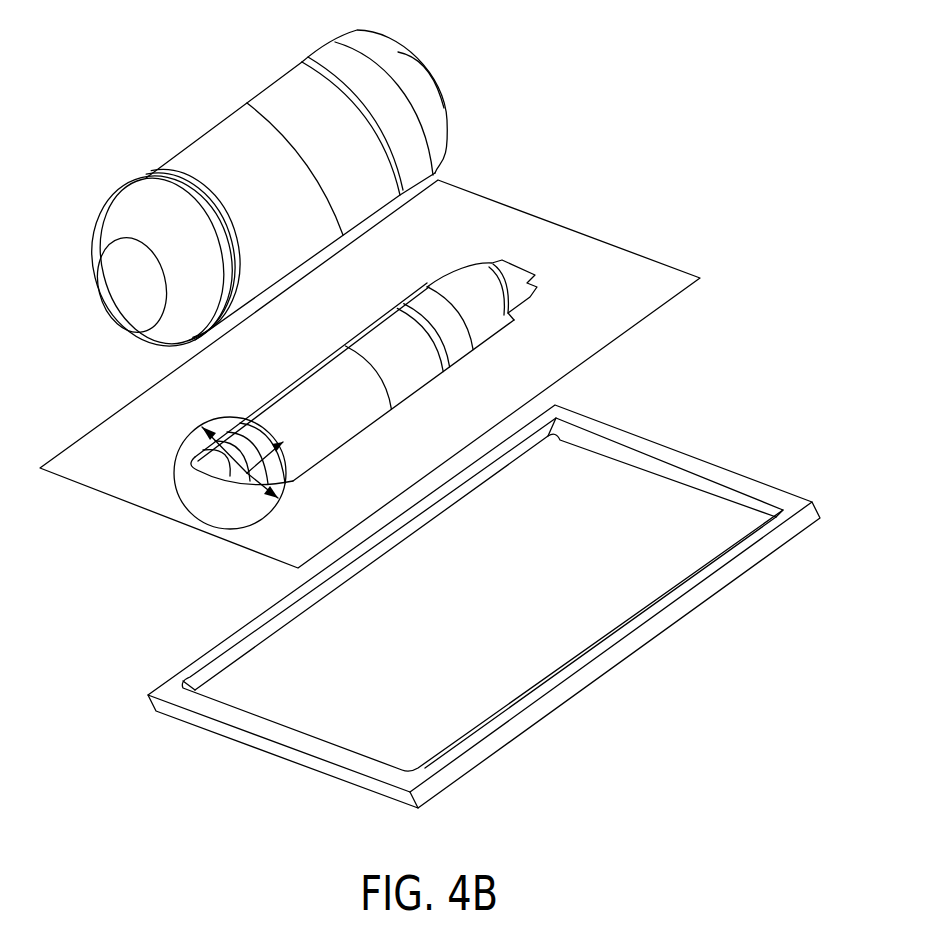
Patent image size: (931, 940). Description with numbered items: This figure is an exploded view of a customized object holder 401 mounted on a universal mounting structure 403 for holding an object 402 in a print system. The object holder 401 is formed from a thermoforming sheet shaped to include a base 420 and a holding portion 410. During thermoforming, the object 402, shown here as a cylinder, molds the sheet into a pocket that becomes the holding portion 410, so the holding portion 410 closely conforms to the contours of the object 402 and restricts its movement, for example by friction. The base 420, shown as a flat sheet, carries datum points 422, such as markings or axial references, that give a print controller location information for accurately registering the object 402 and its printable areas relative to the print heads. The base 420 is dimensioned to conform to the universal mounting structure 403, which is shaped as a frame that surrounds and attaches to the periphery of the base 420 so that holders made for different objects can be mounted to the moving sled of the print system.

The customized object holder 401 is at (117, 432).
The object 402 is at (110, 207).
The universal mounting structure 403 is at (150, 694).
The holding portion 410 is at (497, 320).
The base 420 is at (557, 238).
The datum points 422 is at (190, 510).